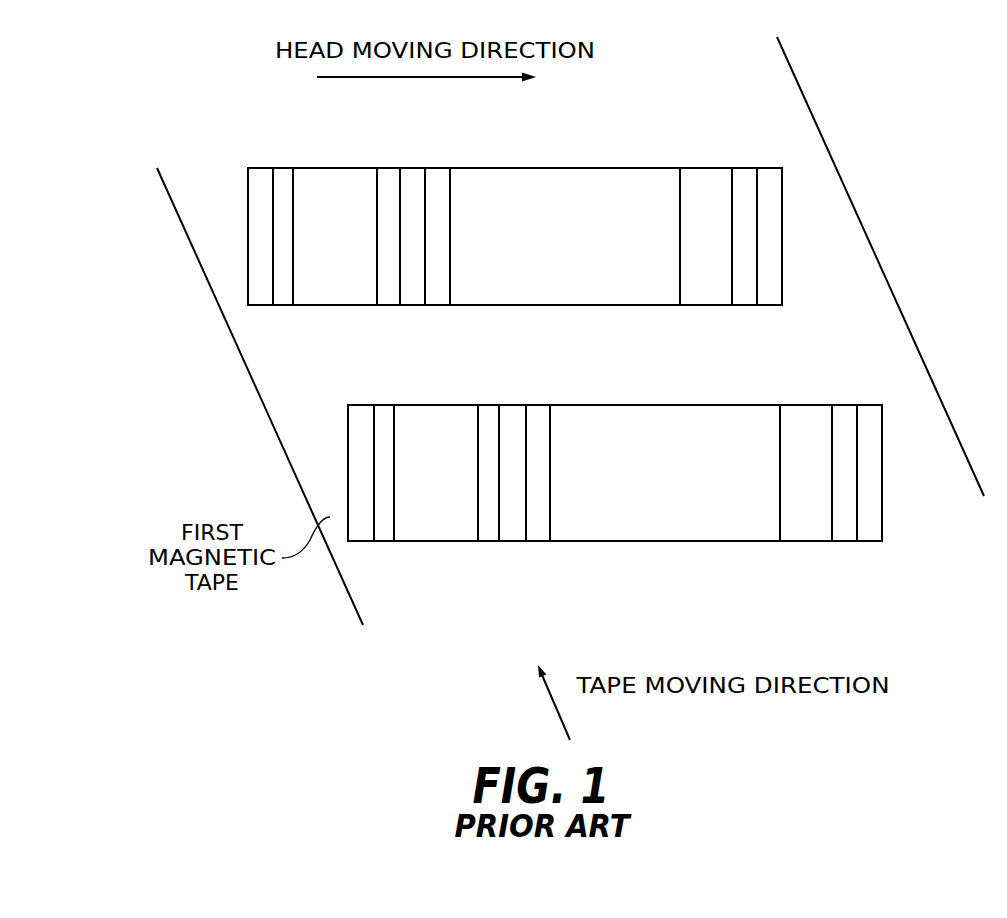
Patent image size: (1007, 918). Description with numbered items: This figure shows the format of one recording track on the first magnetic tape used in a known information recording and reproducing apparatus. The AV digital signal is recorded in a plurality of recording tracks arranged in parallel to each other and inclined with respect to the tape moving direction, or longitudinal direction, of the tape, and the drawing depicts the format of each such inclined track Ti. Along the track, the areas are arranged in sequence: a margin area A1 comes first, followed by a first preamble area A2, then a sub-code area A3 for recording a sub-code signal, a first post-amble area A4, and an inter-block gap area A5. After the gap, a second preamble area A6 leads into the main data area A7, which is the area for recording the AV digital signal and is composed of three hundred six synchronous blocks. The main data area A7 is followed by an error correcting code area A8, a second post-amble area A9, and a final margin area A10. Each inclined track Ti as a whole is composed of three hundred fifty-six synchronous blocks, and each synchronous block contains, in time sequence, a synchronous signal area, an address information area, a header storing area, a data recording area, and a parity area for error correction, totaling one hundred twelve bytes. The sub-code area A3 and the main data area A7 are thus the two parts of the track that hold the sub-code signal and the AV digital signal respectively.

The margin area A1 is at (258, 168).
The first preamble area A2 is at (285, 168).
The sub-code area A3 is at (333, 168).
The first post-amble area A4 is at (387, 168).
The inter-block gap (IBG) area A5 is at (410, 168).
The second preamble area A6 is at (442, 168).
The main data area A7 is at (548, 300).
The error correcting code area A8 is at (697, 300).
The second post-amble area A9 is at (745, 300).
The margin area A10 is at (770, 300).
The inclined track Ti is at (507, 158).